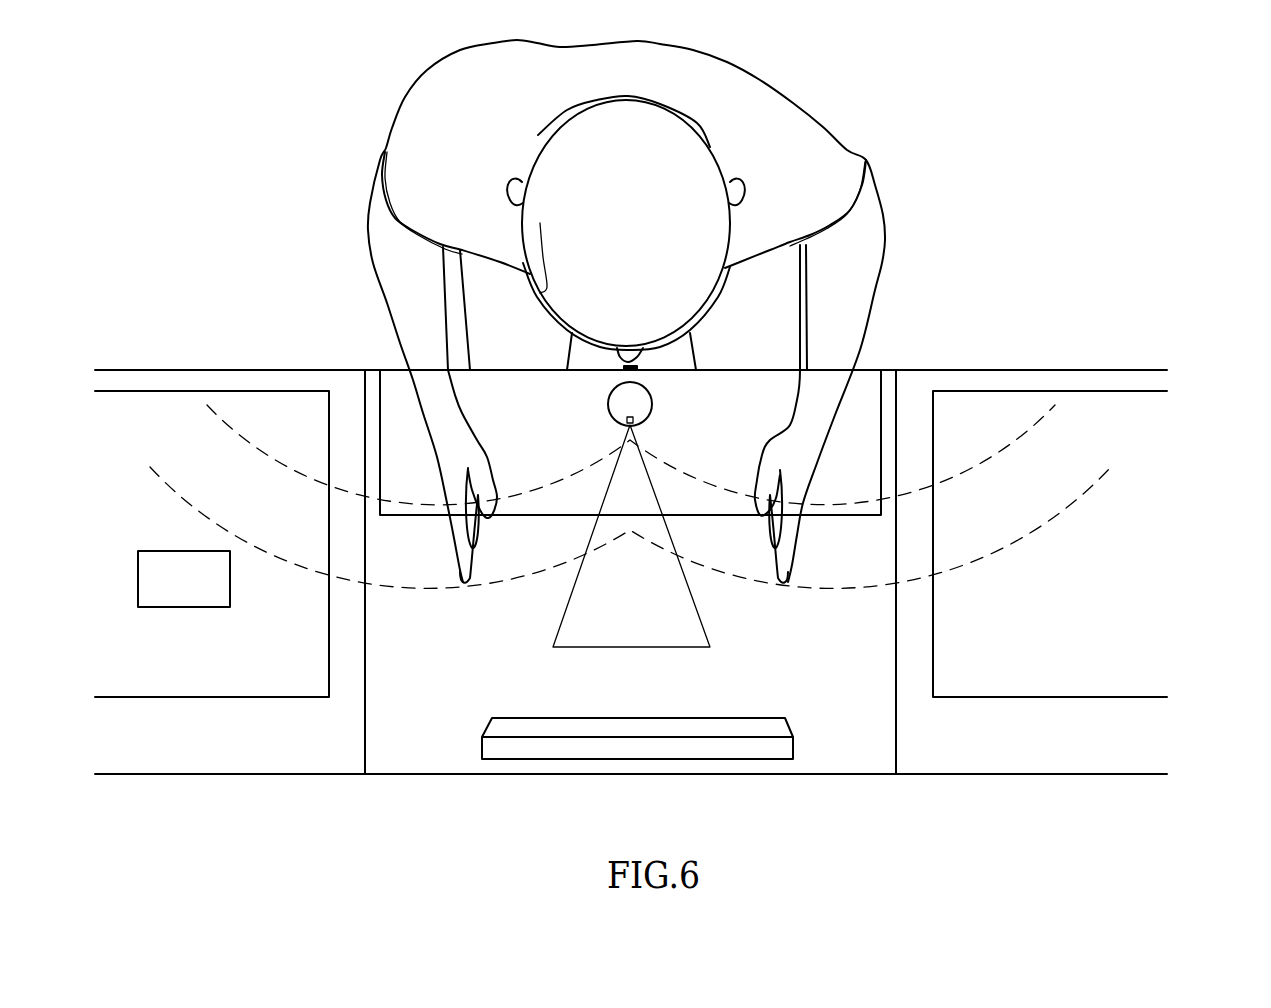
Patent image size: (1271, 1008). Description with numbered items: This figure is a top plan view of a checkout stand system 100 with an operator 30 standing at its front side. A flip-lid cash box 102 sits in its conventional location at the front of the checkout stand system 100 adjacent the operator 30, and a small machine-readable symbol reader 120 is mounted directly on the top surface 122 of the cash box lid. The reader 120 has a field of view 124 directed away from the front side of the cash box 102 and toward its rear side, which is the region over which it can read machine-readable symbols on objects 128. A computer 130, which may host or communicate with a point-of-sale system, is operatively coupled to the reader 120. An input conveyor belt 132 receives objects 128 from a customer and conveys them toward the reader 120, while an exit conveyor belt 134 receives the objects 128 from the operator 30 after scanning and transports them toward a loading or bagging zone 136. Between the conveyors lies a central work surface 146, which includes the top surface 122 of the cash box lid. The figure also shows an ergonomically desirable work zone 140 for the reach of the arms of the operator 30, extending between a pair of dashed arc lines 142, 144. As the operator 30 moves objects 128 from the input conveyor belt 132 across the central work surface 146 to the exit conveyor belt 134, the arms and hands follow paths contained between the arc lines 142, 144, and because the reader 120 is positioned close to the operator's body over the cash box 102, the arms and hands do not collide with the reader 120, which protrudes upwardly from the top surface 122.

The operator 30 is at (805, 115).
The checkout stand system 100 is at (1064, 118).
The cash box 102 is at (872, 358).
The machine-readable symbol reader 120 is at (637, 402).
The top surface 122 is at (504, 393).
The field of view 124 is at (567, 606).
The objects 128 is at (138, 578).
The computer 130 is at (698, 747).
The input conveyor belt 132 is at (225, 675).
The exit conveyor belt 134 is at (1021, 665).
The bagging zone 136 is at (1194, 410).
The work zone 140 is at (1058, 455).
The arc line 142 is at (223, 423).
The arc line 144 is at (172, 487).
The central work surface 146 is at (405, 548).